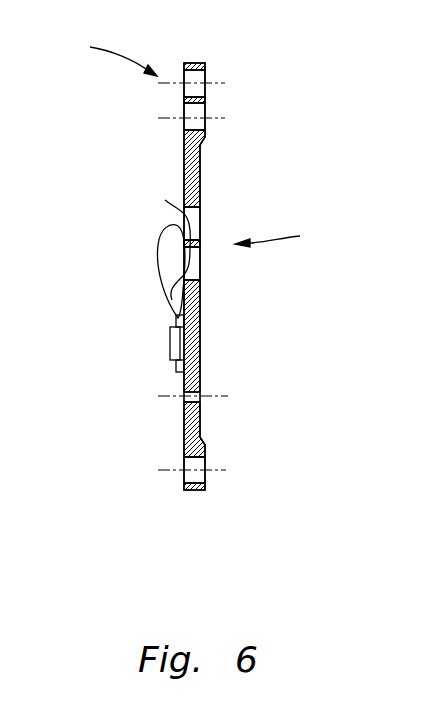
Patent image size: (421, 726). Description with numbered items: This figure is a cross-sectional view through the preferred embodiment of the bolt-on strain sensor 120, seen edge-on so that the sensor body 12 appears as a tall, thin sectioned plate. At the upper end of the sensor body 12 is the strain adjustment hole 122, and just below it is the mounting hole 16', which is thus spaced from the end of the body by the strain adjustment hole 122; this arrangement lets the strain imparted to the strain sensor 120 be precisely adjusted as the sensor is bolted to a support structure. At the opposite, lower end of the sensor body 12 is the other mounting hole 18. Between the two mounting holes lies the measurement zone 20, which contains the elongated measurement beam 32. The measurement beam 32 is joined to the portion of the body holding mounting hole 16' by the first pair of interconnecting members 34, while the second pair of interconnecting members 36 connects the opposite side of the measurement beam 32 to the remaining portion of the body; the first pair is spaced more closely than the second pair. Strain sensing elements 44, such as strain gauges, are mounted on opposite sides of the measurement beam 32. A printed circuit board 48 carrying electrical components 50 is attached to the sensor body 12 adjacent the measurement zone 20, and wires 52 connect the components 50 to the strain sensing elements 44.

The strain sensor 120 is at (102, 57).
The strain adjustment hole 122 is at (205, 77).
The mounting hole 16' is at (231, 103).
The strain sensing elements 44 is at (165, 200).
The first pair of interconnecting members 34 is at (200, 213).
The measurement beam 32 is at (183, 243).
The measurement zone 20 is at (279, 237).
The wires 52 is at (160, 262).
The second pair of interconnecting members 36 is at (200, 270).
The components 50 is at (170, 342).
The sensor body 12 is at (192, 360).
The printed circuit board 48 is at (182, 370).
The mounting hole 18 is at (200, 472).